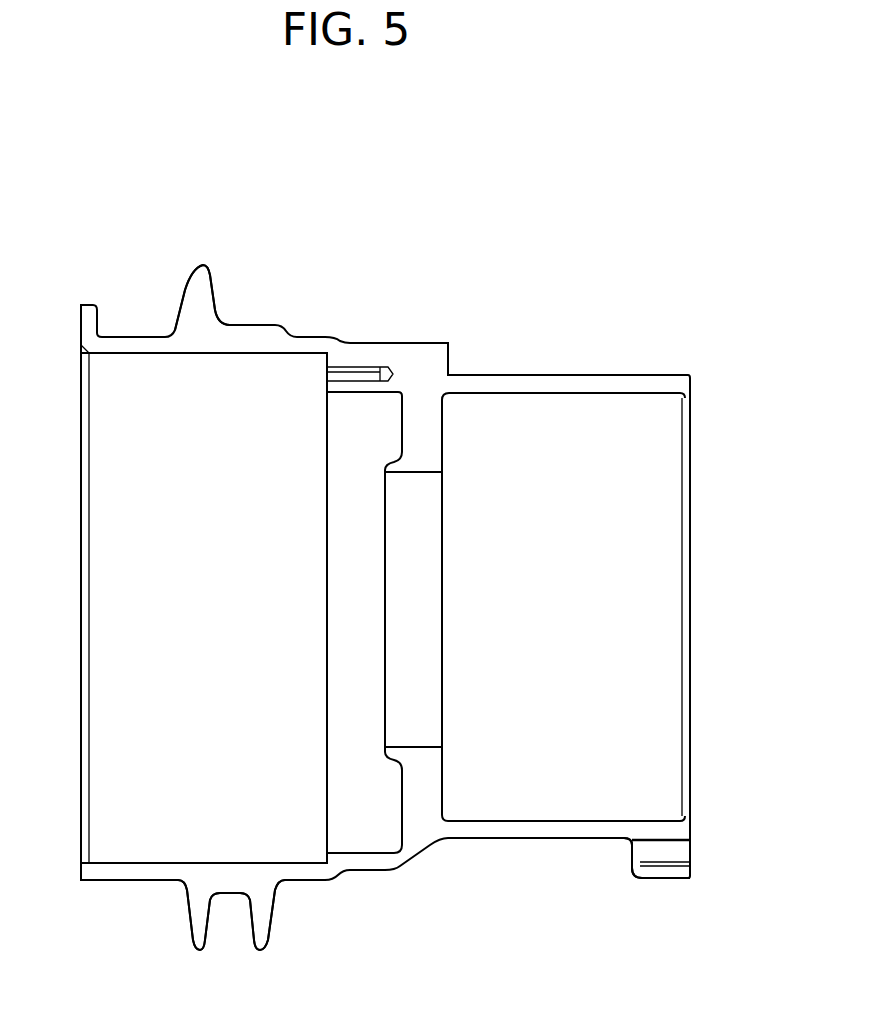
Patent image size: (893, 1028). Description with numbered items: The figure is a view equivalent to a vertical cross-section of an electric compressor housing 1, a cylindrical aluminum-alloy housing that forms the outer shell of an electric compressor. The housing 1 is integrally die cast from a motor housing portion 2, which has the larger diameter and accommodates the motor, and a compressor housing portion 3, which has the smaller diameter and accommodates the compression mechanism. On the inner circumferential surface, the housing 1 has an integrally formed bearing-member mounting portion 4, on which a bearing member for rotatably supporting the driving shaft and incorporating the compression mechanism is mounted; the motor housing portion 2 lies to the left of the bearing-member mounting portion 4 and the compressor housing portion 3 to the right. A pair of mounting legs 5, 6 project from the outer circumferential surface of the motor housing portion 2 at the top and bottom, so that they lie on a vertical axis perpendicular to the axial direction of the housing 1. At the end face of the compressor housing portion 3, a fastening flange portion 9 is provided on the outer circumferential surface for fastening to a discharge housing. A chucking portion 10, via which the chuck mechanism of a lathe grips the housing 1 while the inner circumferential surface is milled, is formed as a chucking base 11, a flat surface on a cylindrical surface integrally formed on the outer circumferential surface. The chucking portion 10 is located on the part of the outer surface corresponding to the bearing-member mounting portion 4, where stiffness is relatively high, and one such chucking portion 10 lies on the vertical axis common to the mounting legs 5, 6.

The electric compressor housing 1 is at (375, 250).
The motor housing portion 2 is at (131, 868).
The compressor housing portion 3 is at (557, 830).
The bearing-member mounting portion 4 is at (426, 780).
The mounting leg 5 is at (200, 291).
The mounting leg 6 is at (265, 925).
The fastening flange portion 9 is at (678, 852).
The chucking portion 10 is at (470, 345).
The chucking base 11 is at (423, 343).